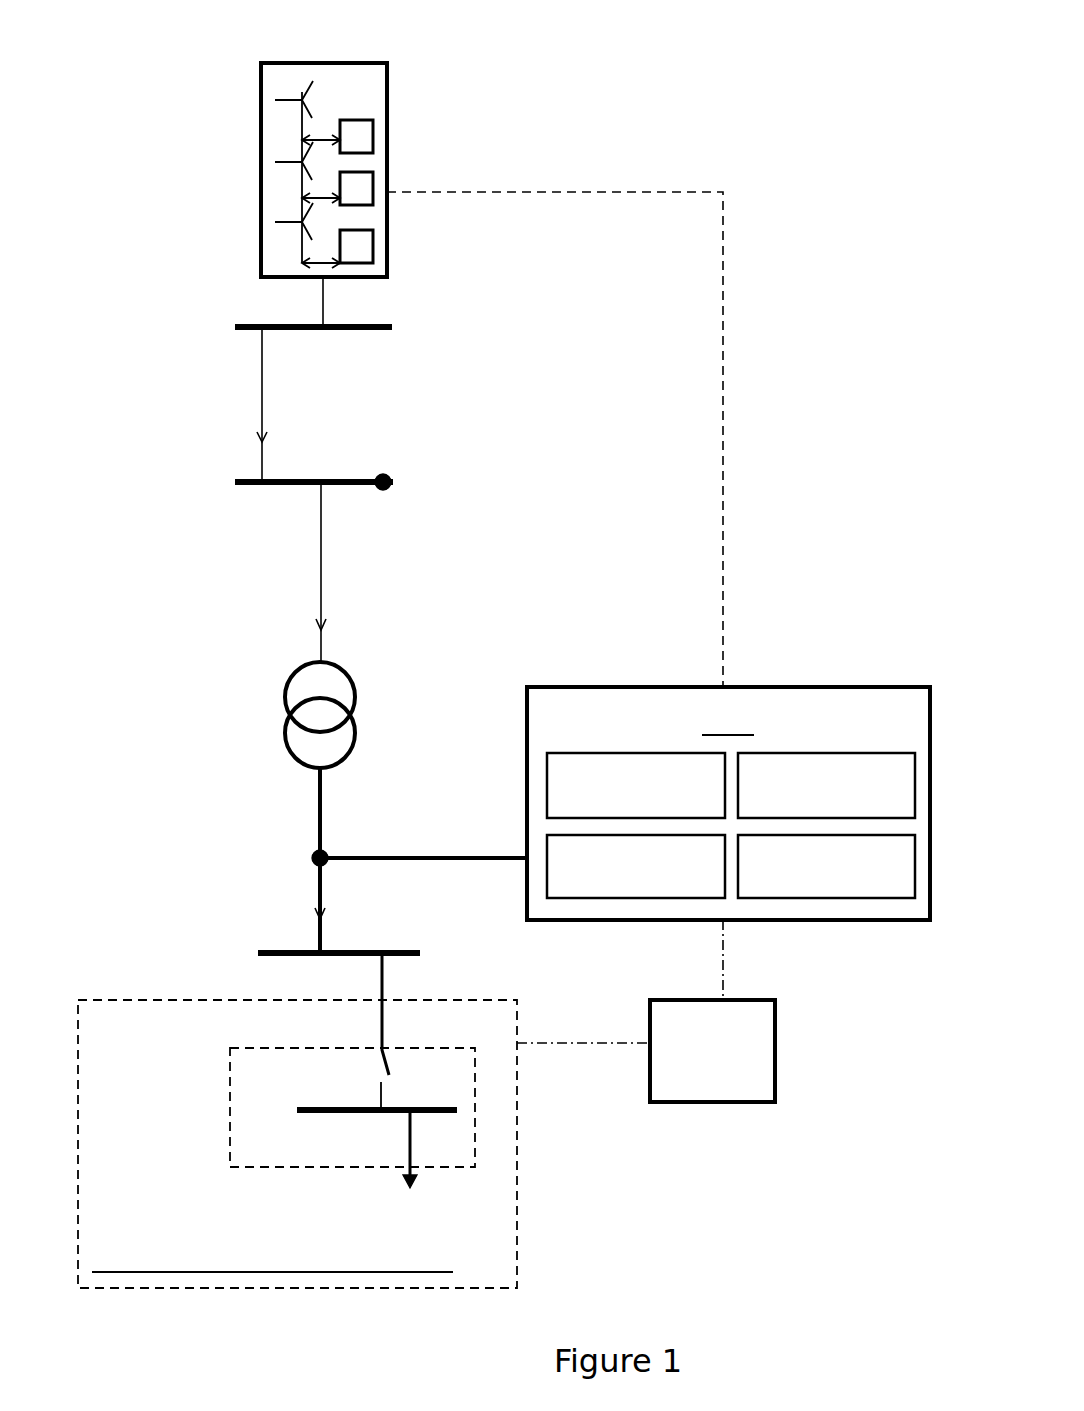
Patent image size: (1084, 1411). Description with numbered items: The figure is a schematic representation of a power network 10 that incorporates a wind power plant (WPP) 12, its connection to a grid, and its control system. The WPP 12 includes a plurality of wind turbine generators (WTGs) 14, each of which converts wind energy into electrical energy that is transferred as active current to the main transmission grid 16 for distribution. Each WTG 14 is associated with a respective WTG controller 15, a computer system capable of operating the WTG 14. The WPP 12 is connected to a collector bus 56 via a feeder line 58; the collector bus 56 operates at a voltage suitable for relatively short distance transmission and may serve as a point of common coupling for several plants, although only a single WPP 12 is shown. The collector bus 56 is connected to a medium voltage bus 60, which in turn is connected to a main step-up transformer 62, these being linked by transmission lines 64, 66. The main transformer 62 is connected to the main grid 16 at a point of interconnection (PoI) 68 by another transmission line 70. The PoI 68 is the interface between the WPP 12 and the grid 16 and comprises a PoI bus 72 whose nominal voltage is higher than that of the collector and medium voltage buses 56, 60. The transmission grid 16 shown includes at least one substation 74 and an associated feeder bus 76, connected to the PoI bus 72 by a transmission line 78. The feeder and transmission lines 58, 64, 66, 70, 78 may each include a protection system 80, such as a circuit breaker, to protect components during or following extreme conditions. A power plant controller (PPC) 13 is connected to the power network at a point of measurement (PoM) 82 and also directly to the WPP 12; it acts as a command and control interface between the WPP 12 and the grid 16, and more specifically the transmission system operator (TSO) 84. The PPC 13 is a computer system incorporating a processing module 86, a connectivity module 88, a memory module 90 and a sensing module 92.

The power network 10 is at (684, 153).
The wind power plant (WPP) 12 is at (387, 82).
The power plant controller (PPC) 13 is at (815, 687).
The wind turbine generator (WTG) 14 is at (290, 78).
The WTG controller 15 is at (373, 128).
The main transmission grid 16 is at (117, 1000).
The collector bus 56 is at (392, 322).
The feeder line 58 is at (323, 292).
The medium voltage bus 60 is at (245, 485).
The main step-up transformer 62 is at (286, 740).
The transmission line 64 is at (262, 385).
The transmission line 66 is at (321, 575).
The point of interconnection (PoI) 68 is at (257, 935).
The transmission line 70 is at (323, 800).
The PoI bus 72 is at (420, 950).
The substation 74 is at (230, 1068).
The feeder bus 76 is at (415, 1105).
The transmission line 78 is at (384, 980).
The protection system 80 is at (265, 440).
The point of measurement (PoM) 82 is at (305, 850).
The transmission system operator (TSO) 84 is at (650, 1063).
The processing module 86 is at (585, 753).
The connectivity module 88 is at (800, 753).
The memory module 90 is at (612, 898).
The sensing module 92 is at (822, 898).